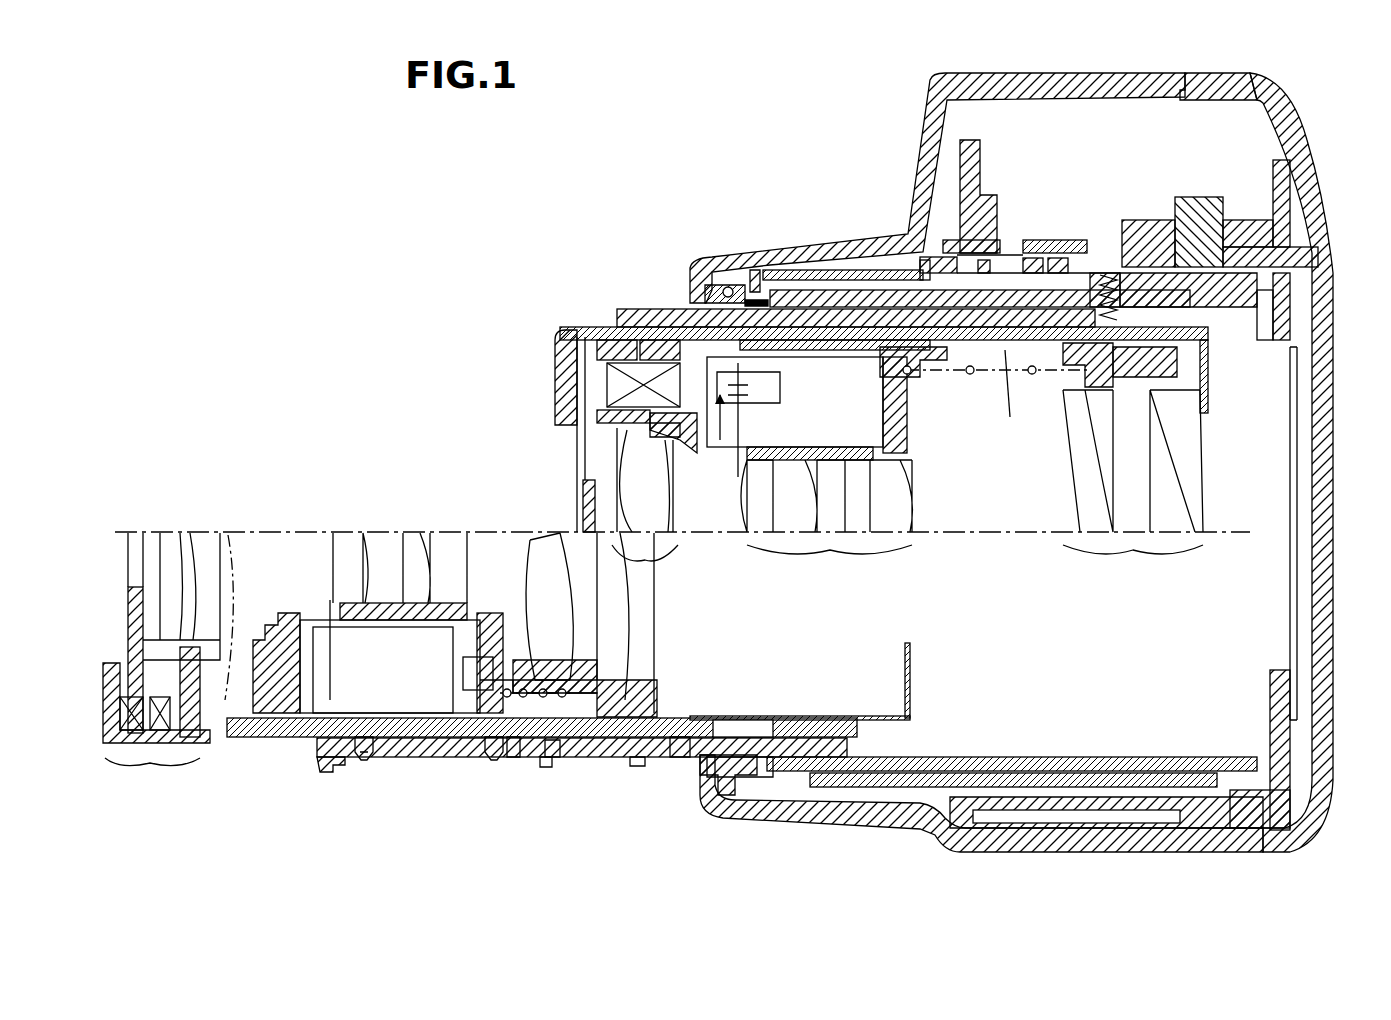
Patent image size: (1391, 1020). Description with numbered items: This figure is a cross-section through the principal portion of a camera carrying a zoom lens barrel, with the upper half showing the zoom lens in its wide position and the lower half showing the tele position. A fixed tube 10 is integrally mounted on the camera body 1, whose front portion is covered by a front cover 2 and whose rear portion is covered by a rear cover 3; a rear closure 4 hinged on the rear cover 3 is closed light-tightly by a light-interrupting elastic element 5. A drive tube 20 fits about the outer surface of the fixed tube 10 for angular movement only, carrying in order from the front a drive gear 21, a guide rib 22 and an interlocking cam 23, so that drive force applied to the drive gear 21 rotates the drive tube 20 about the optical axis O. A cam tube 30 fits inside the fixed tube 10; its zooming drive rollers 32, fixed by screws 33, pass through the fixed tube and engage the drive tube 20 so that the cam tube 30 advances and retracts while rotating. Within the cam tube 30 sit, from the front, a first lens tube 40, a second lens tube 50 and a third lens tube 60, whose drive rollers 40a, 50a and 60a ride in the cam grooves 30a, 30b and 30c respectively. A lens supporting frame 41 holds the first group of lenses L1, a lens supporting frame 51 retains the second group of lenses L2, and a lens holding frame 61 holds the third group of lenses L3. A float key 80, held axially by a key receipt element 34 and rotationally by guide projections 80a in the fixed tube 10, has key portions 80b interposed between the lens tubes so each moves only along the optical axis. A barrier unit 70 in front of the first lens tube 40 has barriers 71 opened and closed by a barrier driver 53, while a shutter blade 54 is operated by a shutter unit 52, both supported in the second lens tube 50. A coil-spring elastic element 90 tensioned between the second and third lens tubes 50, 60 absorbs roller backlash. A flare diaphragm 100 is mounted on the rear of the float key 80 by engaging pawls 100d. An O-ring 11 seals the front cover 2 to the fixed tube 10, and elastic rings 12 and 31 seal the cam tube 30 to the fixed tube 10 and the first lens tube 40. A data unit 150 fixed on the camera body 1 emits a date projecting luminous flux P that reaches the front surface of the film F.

The camera body 1 is at (1236, 245).
The front cover 2 is at (975, 88).
The rear cover 3 is at (1205, 90).
The rear closure 4 is at (1325, 600).
The light-interrupting elastic element 5 is at (1315, 835).
The fixed tube 10 is at (725, 290).
The O-ring 11 is at (735, 288).
The elastic ring 12 is at (748, 782).
The drive tube 20 is at (805, 292).
The drive gear 21 is at (935, 258).
The guide rib 22 is at (990, 240).
The interlocking cam 23 is at (1040, 255).
The cam tube 30 is at (628, 312).
The cam groove 30a is at (405, 757).
The cam groove 30b is at (545, 757).
The cam groove 30c is at (640, 752).
The elastic ring 31 is at (357, 747).
The zooming drive roller 32 is at (1095, 275).
The screw 33 is at (1115, 275).
The key receipt element 34 is at (1112, 305).
The first lens tube 40 is at (566, 330).
The drive roller 40a is at (300, 758).
The lens supporting frame 41 is at (616, 415).
The second lens tube 50 is at (925, 372).
The drive roller 50a is at (512, 757).
The lens supporting frame 51 is at (812, 447).
The shutter unit 52 is at (380, 660).
The barrier driver 53 is at (720, 435).
The shutter blade 54 is at (330, 600).
The third lens tube 60 is at (1075, 355).
The drive roller 60a is at (560, 745).
The lens holding frame 61 is at (1105, 400).
The barrier unit 70 is at (156, 734).
The barrier 71 is at (580, 500).
The float key 80 is at (666, 780).
The guide projection 80a is at (1170, 270).
The key portion 80b is at (830, 345).
The elastic element 90 is at (971, 375).
The flare diaphragm 100 is at (1212, 385).
The engaging pawl 100d is at (735, 720).
The data unit 150 is at (1200, 200).
The optical axis O is at (232, 532).
The date projecting luminous flux P is at (1290, 440).
The film F is at (1297, 493).
The first group of lenses L1 is at (616, 561).
The second group of lenses L2 is at (622, 531).
The third group of lenses L3 is at (1133, 491).